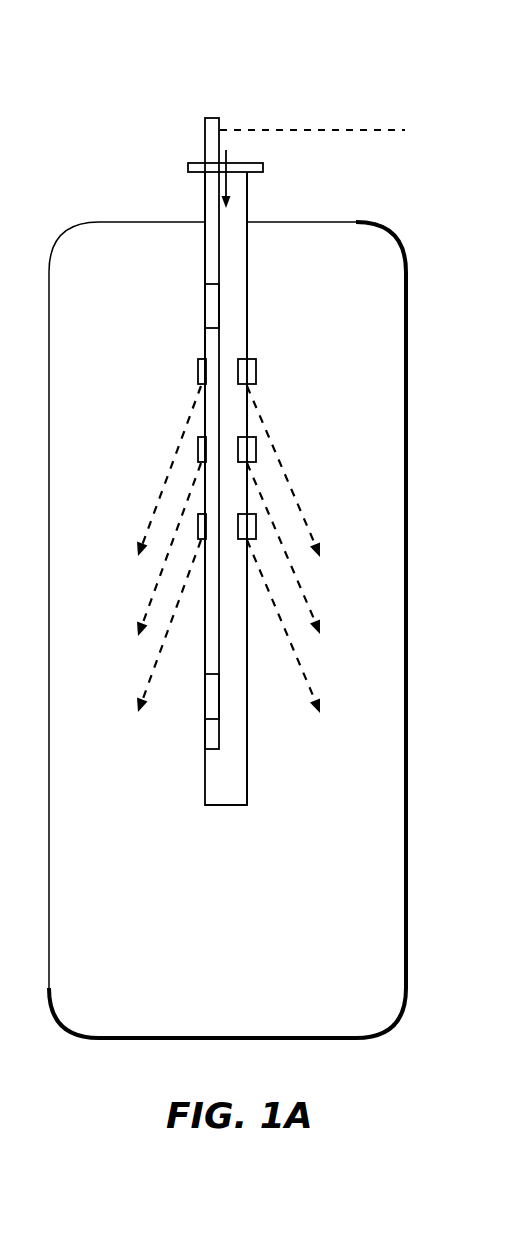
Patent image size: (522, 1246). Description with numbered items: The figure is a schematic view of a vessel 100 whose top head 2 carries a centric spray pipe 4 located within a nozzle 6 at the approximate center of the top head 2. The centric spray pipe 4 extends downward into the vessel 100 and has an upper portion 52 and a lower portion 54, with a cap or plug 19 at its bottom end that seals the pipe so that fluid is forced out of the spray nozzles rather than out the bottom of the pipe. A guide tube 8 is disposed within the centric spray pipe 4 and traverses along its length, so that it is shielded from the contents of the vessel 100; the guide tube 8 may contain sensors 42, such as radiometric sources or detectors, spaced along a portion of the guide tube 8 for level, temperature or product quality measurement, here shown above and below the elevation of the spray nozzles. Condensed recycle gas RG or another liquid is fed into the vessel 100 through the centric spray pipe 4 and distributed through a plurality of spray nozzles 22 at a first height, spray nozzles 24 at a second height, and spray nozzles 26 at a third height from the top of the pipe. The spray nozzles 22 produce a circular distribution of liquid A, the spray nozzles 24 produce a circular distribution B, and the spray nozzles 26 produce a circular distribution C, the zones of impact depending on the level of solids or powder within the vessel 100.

The vessel 100 is at (334, 58).
The top head 2 is at (106, 204).
The centric spray pipe 4 is at (261, 198).
The nozzle 6 is at (190, 153).
The guide tube 8 is at (212, 118).
The cap or plug 19 is at (225, 806).
The spray nozzles 22 is at (257, 370).
The spray nozzles 24 is at (257, 450).
The spray nozzles 26 is at (257, 527).
The sensors 42 is at (204, 304).
The upper portion 52 is at (259, 297).
The lower portion 54 is at (262, 782).
The condensed recycle gas RG is at (334, 131).
The circular distribution of liquid A is at (210, 477).
The circular distribution of liquid B is at (210, 555).
The circular distribution of liquid C is at (210, 631).